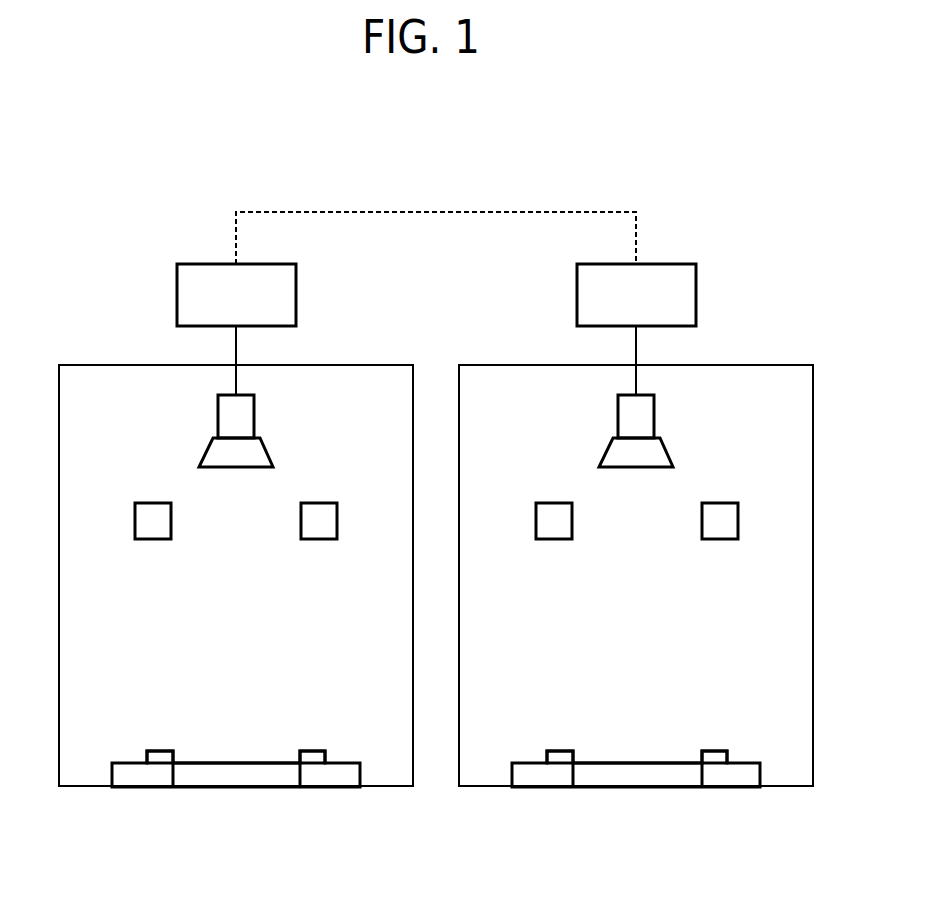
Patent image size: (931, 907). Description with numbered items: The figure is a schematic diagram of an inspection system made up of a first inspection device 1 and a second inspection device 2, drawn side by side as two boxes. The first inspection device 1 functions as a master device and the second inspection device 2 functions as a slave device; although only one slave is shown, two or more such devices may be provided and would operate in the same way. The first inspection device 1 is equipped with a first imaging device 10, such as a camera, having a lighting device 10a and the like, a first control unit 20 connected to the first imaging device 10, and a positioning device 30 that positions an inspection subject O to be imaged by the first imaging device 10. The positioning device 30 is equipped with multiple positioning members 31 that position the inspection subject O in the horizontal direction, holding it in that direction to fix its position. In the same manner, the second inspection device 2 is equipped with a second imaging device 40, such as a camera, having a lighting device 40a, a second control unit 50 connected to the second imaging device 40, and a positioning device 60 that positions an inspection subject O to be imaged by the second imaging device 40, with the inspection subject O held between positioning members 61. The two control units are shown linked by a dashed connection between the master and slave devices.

The first inspection device 1 is at (113, 343).
The second inspection device 2 is at (523, 343).
The first imaging device 10 is at (254, 413).
The lighting device 10a is at (152, 540).
The first control unit 20 is at (296, 293).
The positioning device 30 is at (335, 730).
The positioning members 31 is at (157, 750).
The second imaging device 40 is at (654, 413).
The lighting device 40a is at (553, 540).
The second control unit 50 is at (696, 293).
The positioning device 60 is at (745, 732).
The positioning members 61 is at (558, 750).
The inspection subject O is at (235, 763).